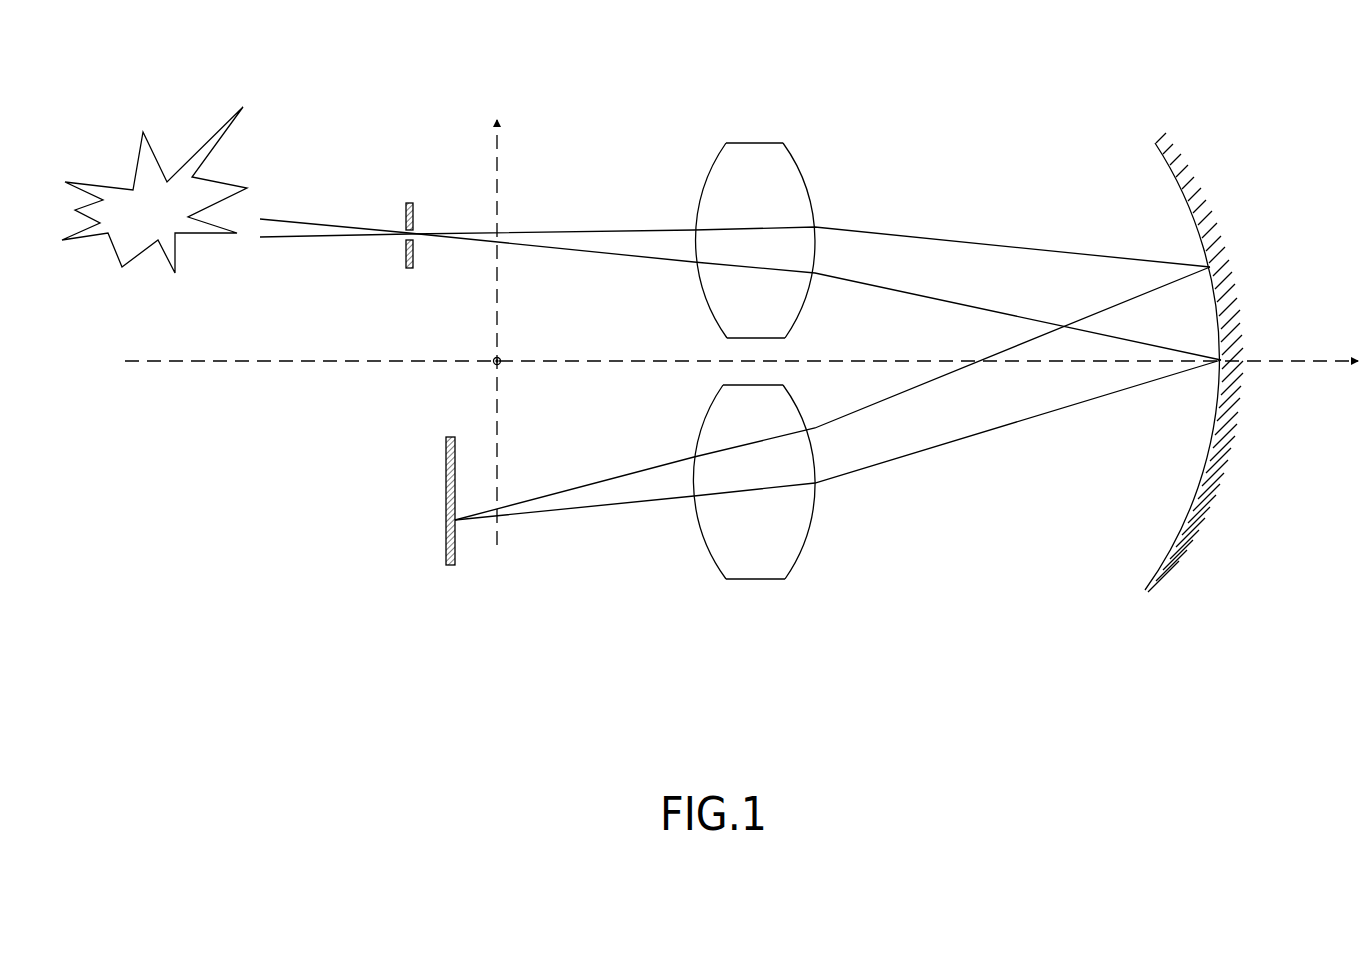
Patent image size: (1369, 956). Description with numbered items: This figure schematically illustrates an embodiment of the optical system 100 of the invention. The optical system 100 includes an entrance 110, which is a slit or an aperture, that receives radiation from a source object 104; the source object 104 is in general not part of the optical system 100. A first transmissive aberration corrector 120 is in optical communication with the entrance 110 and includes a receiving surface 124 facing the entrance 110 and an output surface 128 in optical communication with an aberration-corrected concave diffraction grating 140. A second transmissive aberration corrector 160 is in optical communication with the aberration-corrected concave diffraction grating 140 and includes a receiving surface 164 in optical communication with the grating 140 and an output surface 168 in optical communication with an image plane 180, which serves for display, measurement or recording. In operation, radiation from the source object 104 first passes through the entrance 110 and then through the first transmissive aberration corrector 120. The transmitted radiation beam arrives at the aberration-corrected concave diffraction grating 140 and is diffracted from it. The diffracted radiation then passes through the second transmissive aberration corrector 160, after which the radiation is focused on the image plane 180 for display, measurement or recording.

The optical system 100 is at (710, 344).
The source object 104 is at (143, 132).
The entrance 110 is at (404, 221).
The first transmissive aberration corrector 120 is at (756, 224).
The receiving surface 124 is at (690, 213).
The output surface 128 is at (807, 185).
The aberration-corrected concave diffraction grating 140 is at (1240, 458).
The second transmissive aberration corrector 160 is at (759, 500).
The receiving surface 164 is at (816, 518).
The output surface 168 is at (698, 527).
The image plane 180 is at (447, 532).